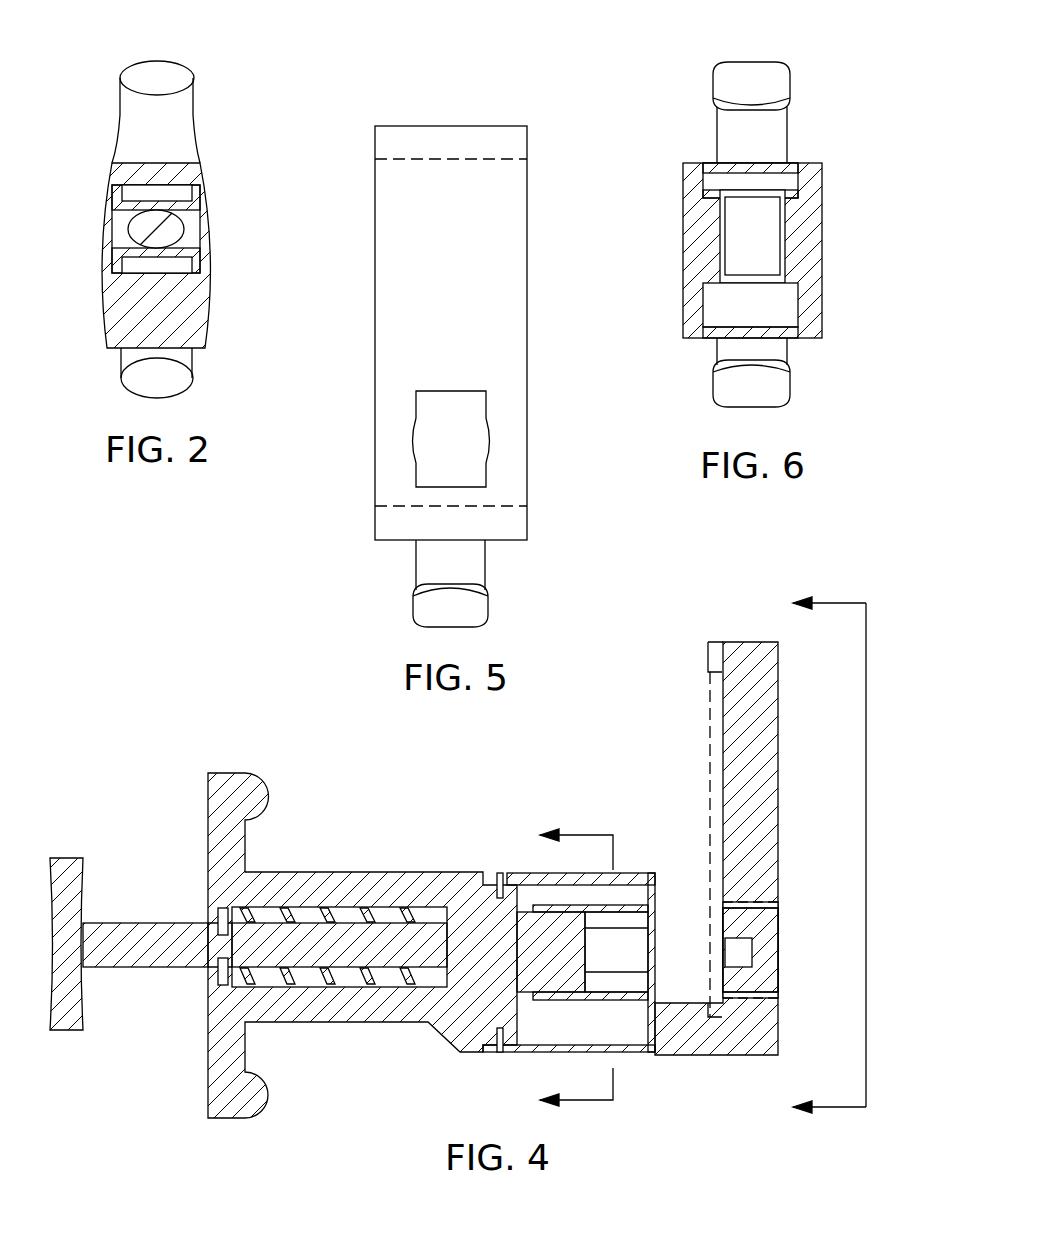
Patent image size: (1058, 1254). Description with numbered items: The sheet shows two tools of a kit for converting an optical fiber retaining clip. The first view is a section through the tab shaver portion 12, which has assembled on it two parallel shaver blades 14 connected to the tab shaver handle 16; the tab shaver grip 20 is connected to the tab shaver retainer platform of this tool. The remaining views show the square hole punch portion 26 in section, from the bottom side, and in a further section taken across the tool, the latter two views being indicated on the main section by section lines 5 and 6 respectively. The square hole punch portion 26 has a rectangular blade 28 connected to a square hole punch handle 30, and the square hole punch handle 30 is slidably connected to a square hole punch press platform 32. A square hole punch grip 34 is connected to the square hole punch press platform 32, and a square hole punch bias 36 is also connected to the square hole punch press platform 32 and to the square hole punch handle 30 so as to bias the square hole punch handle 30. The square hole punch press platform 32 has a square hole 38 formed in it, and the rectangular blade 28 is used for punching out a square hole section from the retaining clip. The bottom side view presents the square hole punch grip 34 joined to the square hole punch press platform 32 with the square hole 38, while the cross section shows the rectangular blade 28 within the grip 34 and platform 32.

In FIG. 2, the tab shaver portion 12 is at (210, 211).
In FIG. 2, the shaver blades 14 is at (196, 190).
In FIG. 2, the tab shaver handle 16 is at (172, 222).
In FIG. 2, the tab shaver grip 20 is at (172, 378).
In FIG. 5, the square hole punch portion 26 is at (503, 333).
In FIG. 6, the square hole punch portion 26 is at (785, 208).
In FIG. 4, the square hole punch portion 26 is at (454, 907).
In FIG. 6, the rectangular blade 28 is at (780, 210).
In FIG. 4, the rectangular blade 28 is at (637, 998).
In FIG. 4, the square hole punch handle 30 is at (62, 1027).
In FIG. 5, the square hole punch press platform 32 is at (495, 263).
In FIG. 4, the square hole punch press platform 32 is at (756, 848).
In FIG. 5, the square hole punch grip 34 is at (472, 603).
In FIG. 6, the square hole punch grip 34 is at (775, 90).
In FIG. 4, the square hole punch grip 34 is at (247, 1108).
In FIG. 4, the square hole punch bias 36 is at (360, 985).
In FIG. 5, the square hole 38 is at (486, 405).
In FIG. 4, the square hole 38 is at (765, 900).
In FIG. 4, the section line 5— 5 is at (814, 855).
In FIG. 4, the section line 6— 6 is at (561, 966).